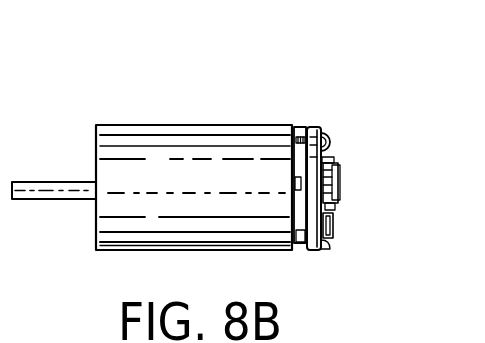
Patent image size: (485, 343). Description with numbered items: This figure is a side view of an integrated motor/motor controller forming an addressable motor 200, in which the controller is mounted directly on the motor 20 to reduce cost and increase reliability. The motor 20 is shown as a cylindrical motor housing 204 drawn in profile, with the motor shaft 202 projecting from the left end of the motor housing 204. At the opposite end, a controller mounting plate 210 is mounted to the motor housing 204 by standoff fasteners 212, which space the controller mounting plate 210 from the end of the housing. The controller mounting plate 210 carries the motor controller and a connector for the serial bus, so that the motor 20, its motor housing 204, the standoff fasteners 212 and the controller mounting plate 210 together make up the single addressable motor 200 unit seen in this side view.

The addressable motor 200 is at (237, 82).
The motor 20 is at (160, 125).
The motor shaft 202 is at (48, 199).
The motor housing 204 is at (237, 213).
The controller mounting plate 210 is at (315, 128).
The standoff fasteners 212 is at (303, 127).